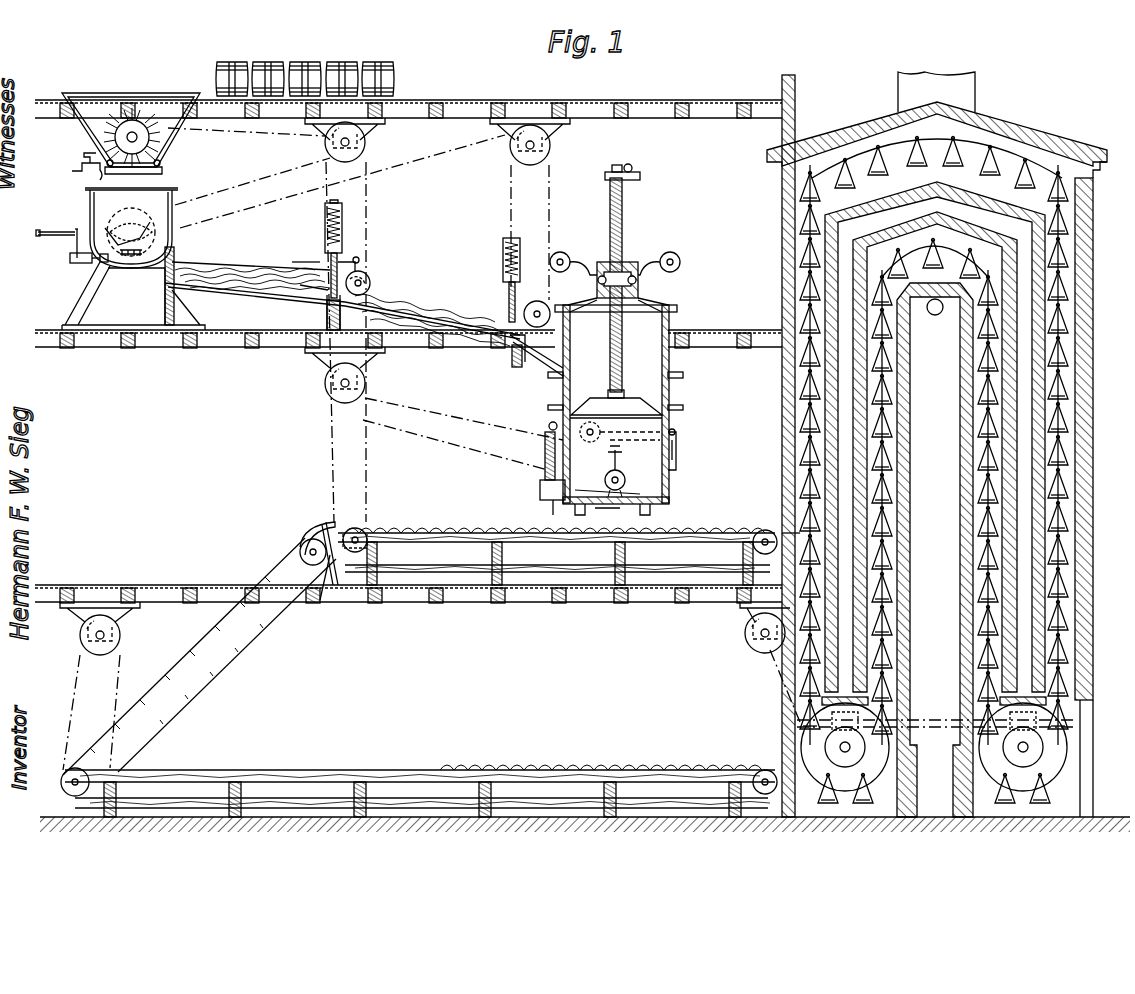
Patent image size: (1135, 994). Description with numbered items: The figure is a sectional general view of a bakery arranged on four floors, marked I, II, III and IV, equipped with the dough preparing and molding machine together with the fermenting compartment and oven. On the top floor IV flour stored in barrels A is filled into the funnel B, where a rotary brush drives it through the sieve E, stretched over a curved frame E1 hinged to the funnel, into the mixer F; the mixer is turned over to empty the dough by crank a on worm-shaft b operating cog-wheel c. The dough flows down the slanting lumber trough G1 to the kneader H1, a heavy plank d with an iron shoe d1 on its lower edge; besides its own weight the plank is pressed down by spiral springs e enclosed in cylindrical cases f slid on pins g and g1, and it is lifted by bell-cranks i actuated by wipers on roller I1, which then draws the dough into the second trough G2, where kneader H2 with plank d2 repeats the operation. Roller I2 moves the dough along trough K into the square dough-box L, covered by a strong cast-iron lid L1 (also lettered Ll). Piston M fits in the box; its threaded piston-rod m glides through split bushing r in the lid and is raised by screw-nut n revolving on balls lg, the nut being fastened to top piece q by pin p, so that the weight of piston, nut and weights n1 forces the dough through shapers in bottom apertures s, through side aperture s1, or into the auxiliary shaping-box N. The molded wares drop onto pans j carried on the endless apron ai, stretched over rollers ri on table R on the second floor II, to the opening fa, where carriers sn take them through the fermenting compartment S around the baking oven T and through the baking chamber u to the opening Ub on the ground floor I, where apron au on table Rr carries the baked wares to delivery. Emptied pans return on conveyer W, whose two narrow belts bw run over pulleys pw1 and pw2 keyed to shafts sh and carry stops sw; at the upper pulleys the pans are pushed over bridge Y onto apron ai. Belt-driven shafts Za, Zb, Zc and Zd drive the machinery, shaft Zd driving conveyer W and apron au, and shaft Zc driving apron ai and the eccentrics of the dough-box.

The barrels A is at (305, 79).
The funnel B is at (131, 130).
The sieve E is at (132, 149).
The curved frame E1 is at (142, 172).
The mixer F is at (131, 228).
The cog-wheel c is at (130, 230).
The crank a is at (57, 243).
The worm-shaft b is at (72, 264).
The trough G1 is at (255, 270).
The trough rail g1 is at (305, 250).
The heavy plank d is at (312, 280).
The iron shoe d1 is at (326, 302).
The roller I1 is at (343, 309).
The kneader H1 is at (325, 224).
The pins g is at (342, 195).
The spiral springs e is at (343, 221).
The cylindrical cases f is at (343, 243).
The bell-cranks i is at (360, 262).
The lid L1 is at (362, 293).
The second trough G2 is at (440, 300).
The second kneader H2 is at (503, 252).
The kneader plank d2 is at (508, 345).
The roller I2 is at (521, 361).
The trough K is at (538, 355).
The dough-box L is at (615, 406).
The piston M is at (630, 408).
The piston-rod m is at (623, 226).
The top piece q is at (604, 176).
The pin p is at (633, 168).
The screw-nut n is at (632, 262).
The weights n1 is at (624, 253).
The balls lg is at (597, 282).
The gear Ll is at (638, 282).
The split bushing r is at (623, 305).
The apertures s is at (622, 492).
The side aperture s1 is at (670, 490).
The auxiliary shaping-box N is at (540, 488).
The pulley Za is at (366, 146).
The pulley Zb is at (550, 147).
The shaft Zc is at (325, 388).
The shaft Zd is at (80, 640).
The table R is at (556, 559).
The moving apron ai is at (442, 552).
The pans j is at (425, 639).
The rollers ri is at (558, 552).
The shafts sh is at (300, 552).
The pulleys pw2 is at (309, 553).
The bridge Y is at (320, 600).
The table Rr is at (421, 793).
The moving apron au is at (274, 770).
The pulleys pw1 is at (72, 804).
The conveyer W is at (199, 656).
The stops sw is at (228, 681).
The belts bw is at (186, 710).
The fermenting-compartment S is at (937, 444).
The baking-oven T is at (935, 550).
The baking-chamber u is at (935, 261).
The carriers sn is at (933, 470).
The opening Ub is at (936, 745).
The opening fa is at (782, 506).
The ground floor I is at (576, 814).
The second floor II is at (218, 582).
The third floor III is at (256, 325).
The fourth floor IV is at (492, 94).